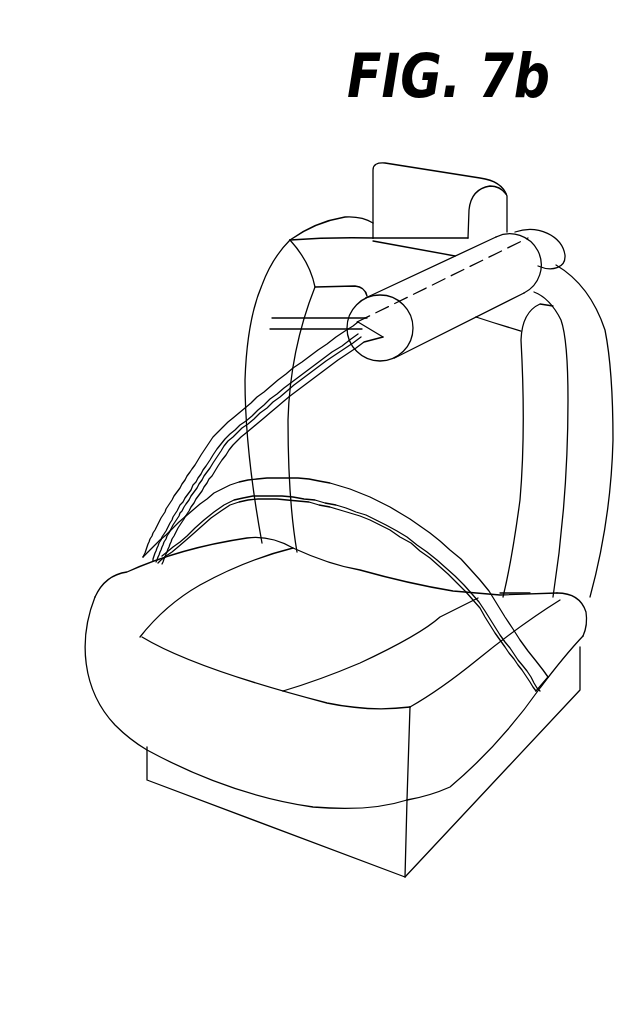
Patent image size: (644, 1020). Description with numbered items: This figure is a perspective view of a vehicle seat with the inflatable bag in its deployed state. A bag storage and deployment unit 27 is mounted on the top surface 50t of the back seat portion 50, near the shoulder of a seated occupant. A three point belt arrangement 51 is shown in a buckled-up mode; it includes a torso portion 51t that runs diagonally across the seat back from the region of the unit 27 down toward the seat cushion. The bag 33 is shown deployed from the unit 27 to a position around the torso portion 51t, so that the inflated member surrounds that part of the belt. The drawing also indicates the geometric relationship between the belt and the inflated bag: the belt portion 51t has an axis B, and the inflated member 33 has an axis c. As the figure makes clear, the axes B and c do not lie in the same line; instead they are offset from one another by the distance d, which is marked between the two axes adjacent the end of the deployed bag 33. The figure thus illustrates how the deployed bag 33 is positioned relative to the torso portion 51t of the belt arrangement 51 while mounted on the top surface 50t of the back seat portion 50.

The bag storage and deployment unit 27 is at (550, 247).
The bag 33 is at (453, 330).
The back seat portion 50 is at (349, 512).
The top surface 50t is at (347, 228).
The three point belt arrangement 51 is at (280, 443).
The torso portion 51t is at (227, 427).
The axis of belt portion B is at (277, 382).
The axis of inflated member c is at (489, 256).
The offset distance d is at (290, 320).